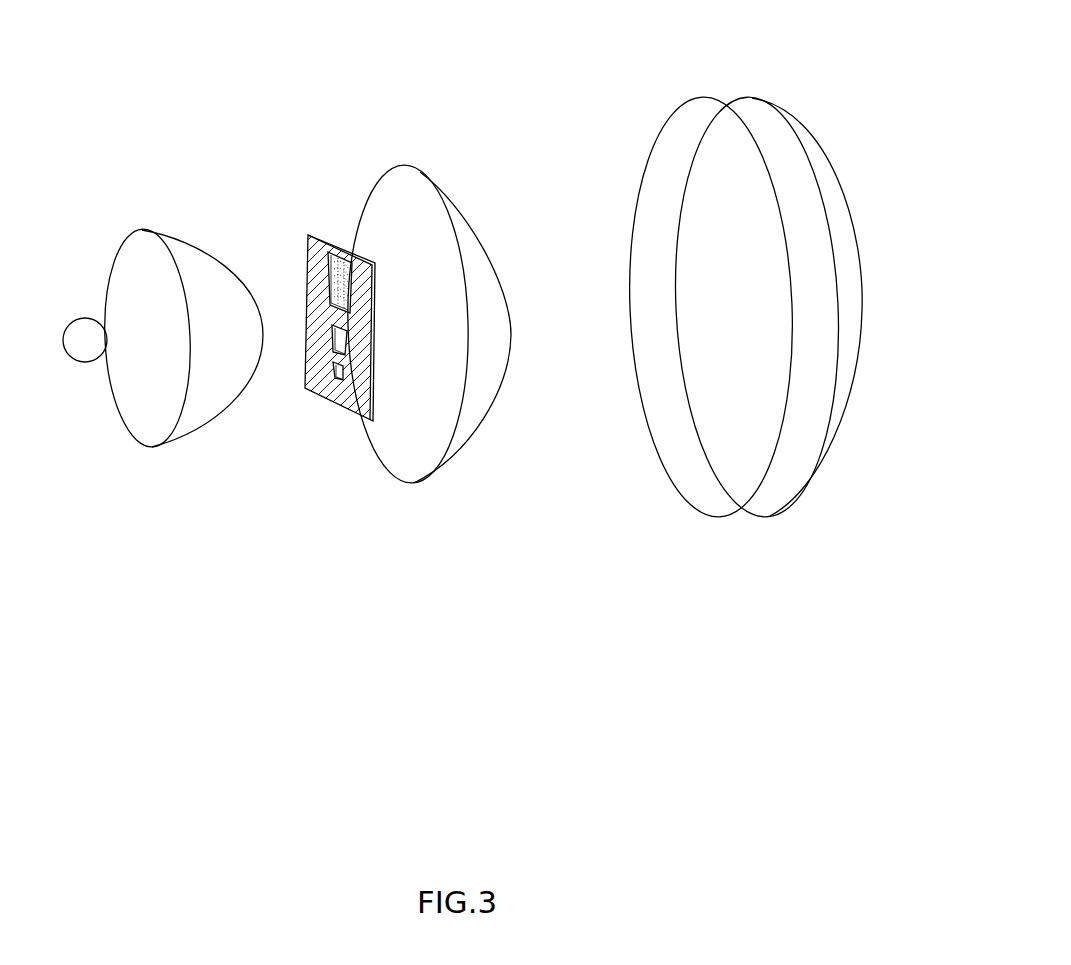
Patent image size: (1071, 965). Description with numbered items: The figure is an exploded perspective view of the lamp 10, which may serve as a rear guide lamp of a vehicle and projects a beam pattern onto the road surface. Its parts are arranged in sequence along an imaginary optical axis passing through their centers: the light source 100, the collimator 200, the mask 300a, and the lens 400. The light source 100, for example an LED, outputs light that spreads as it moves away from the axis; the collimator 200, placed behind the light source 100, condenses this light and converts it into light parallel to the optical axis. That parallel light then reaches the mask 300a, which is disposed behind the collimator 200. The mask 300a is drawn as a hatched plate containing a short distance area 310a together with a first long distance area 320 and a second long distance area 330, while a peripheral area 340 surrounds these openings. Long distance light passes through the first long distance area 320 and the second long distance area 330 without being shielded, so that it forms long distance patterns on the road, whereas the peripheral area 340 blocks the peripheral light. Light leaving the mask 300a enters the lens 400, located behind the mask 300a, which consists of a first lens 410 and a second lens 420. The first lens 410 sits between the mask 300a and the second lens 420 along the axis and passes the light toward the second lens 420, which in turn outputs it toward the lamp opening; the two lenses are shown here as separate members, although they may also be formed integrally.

The lamp 10 is at (310, 32).
The light source 100 is at (82, 352).
The collimator 200 is at (215, 393).
The mask 300a is at (345, 423).
The short distance area 310a is at (323, 275).
The first long distance area 320 is at (327, 355).
The second long distance area 330 is at (333, 383).
The peripheral area 340 is at (407, 484).
The lens 400 is at (500, 520).
The first lens 410 is at (472, 418).
The second lens 420 is at (672, 425).